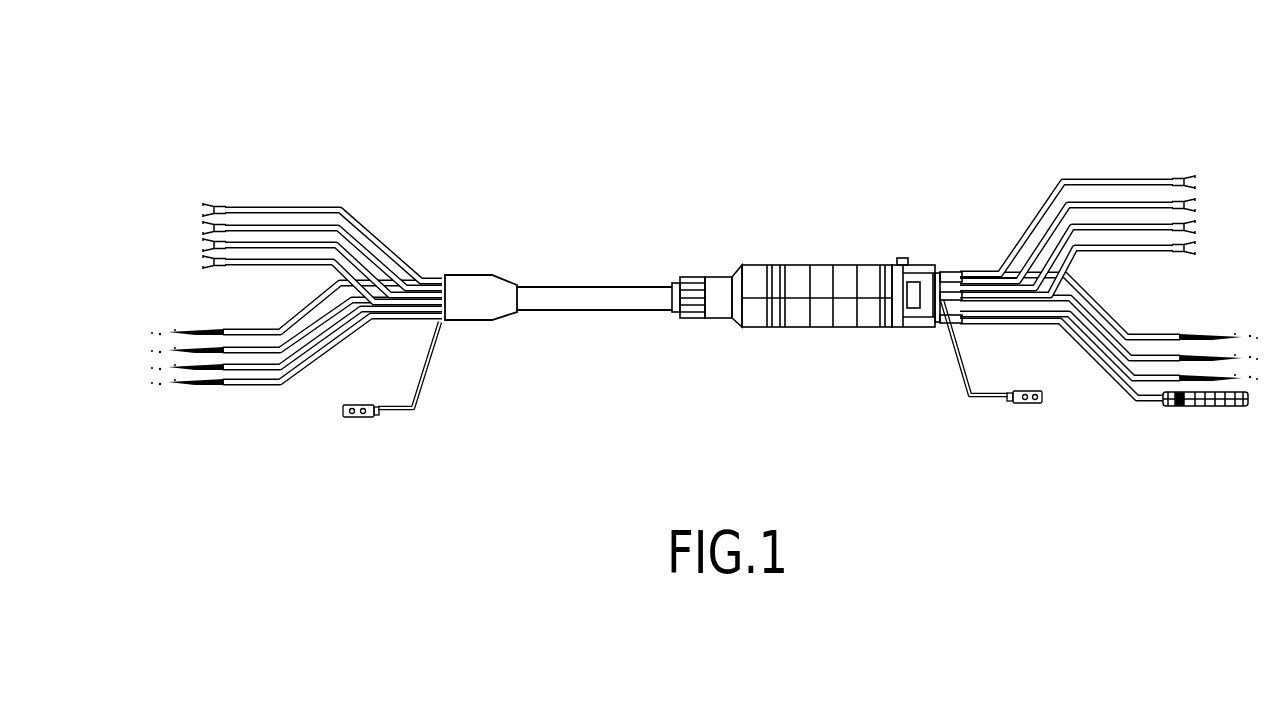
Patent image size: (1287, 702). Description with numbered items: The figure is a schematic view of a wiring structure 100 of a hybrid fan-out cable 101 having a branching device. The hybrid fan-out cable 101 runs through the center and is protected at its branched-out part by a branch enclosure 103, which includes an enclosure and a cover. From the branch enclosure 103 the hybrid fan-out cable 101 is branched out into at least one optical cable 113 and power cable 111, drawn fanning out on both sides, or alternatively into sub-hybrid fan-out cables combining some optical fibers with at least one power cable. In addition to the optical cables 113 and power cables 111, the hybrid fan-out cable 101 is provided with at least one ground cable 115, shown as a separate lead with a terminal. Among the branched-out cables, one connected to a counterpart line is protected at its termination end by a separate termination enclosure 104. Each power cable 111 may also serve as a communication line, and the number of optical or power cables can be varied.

The wiring structure 100 is at (670, 77).
The hybrid fan-out cable 101 is at (593, 293).
The branch enclosure 103 is at (876, 224).
The termination enclosure 104 is at (1204, 418).
The power cable 111 is at (381, 264).
The optical cable 113 is at (240, 334).
The ground cable 115 is at (393, 412).